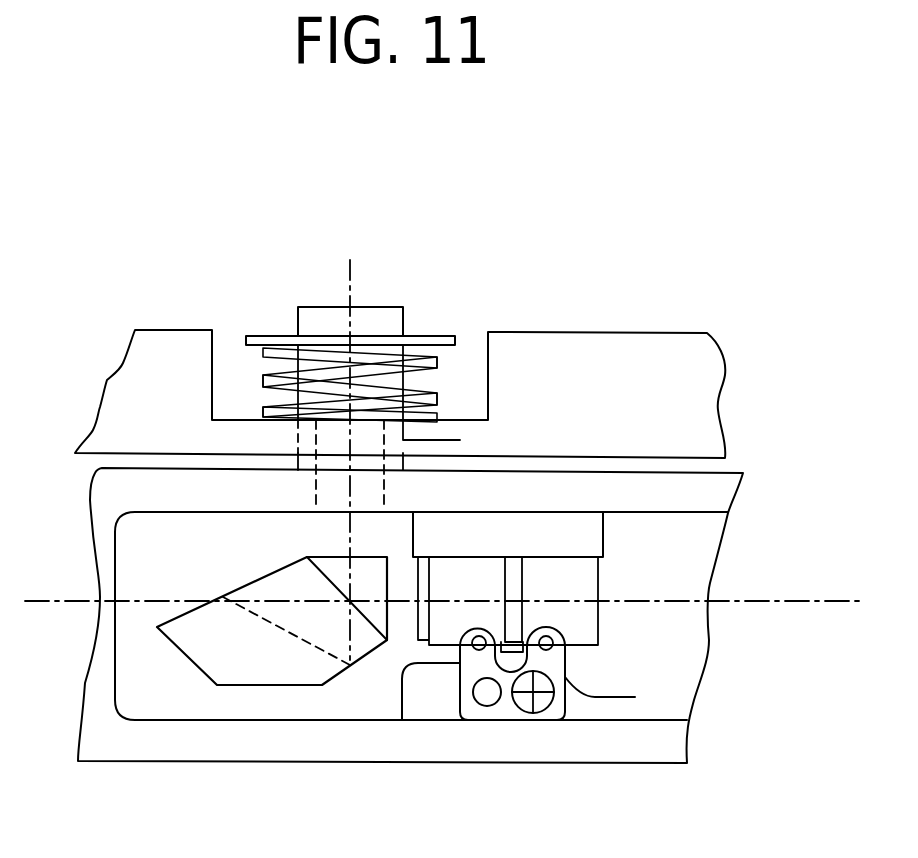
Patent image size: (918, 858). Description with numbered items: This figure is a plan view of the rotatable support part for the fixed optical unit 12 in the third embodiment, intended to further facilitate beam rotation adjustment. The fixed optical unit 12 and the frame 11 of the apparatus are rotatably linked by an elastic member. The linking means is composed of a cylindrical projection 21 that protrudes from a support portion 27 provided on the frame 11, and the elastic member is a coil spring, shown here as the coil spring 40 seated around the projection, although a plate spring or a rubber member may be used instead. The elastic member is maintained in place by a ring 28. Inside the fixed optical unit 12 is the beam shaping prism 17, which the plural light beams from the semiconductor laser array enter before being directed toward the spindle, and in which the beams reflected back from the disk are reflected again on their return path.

The frame 11 is at (172, 355).
The fixed optical unit 12 is at (515, 763).
The beam shaping prism 17 is at (272, 675).
The cylindrical projection 21 is at (382, 315).
The support portion 27 is at (460, 440).
The ring 28 is at (447, 338).
The coil spring 40 is at (273, 378).